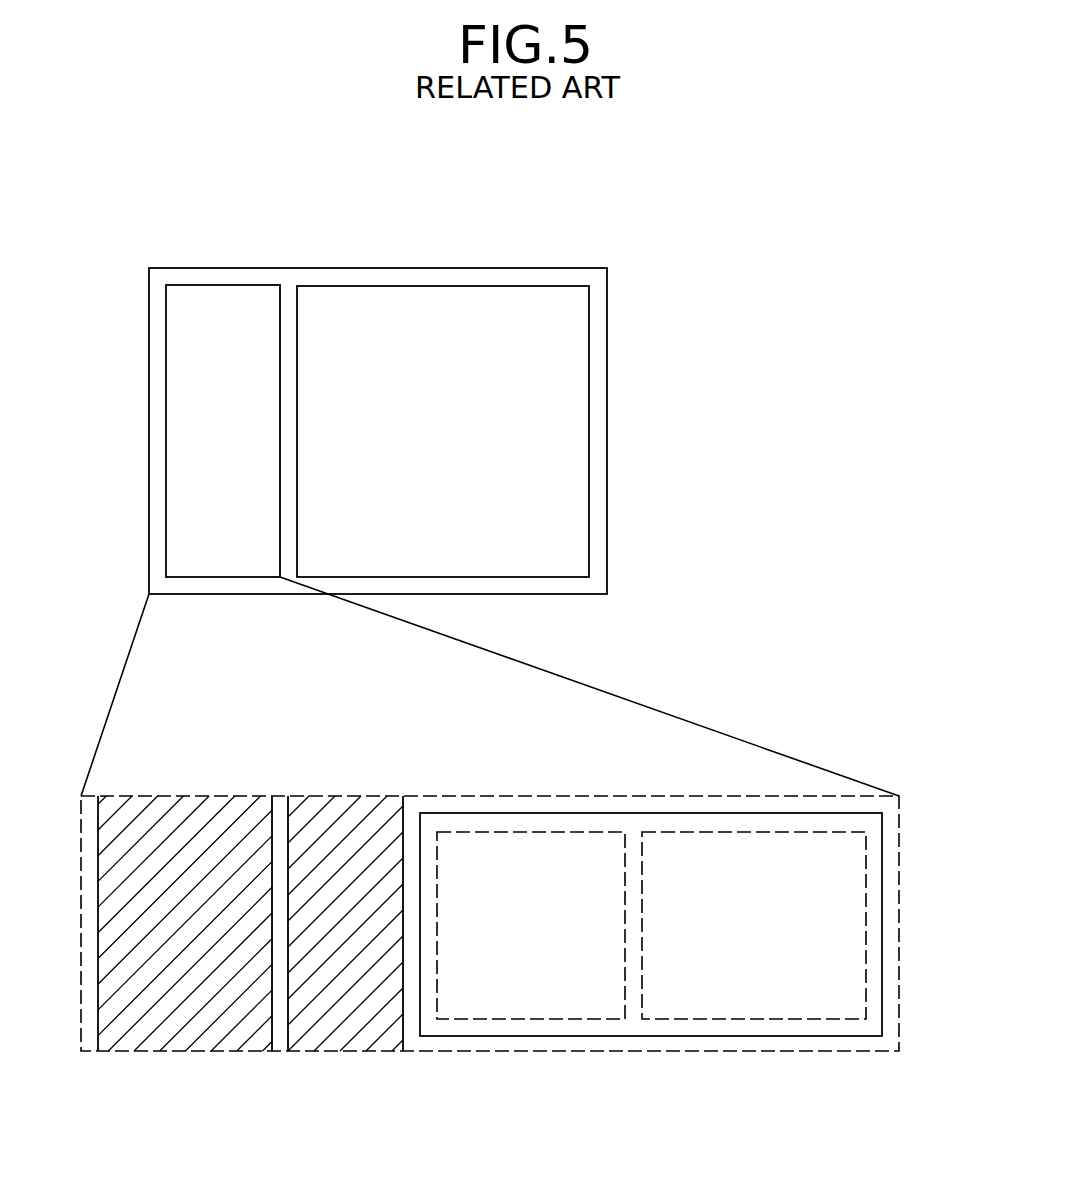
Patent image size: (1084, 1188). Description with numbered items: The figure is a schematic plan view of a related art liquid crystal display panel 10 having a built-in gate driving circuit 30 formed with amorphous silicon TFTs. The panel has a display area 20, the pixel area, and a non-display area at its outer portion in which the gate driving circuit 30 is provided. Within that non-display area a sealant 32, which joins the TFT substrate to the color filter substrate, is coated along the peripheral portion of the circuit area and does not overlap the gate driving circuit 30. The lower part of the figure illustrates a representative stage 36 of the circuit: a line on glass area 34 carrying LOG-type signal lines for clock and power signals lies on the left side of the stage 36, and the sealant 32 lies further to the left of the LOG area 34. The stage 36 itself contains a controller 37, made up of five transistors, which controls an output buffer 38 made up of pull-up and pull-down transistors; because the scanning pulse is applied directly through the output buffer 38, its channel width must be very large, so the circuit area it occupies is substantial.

The liquid crystal display panel 10 is at (607, 425).
The display area 20 is at (508, 391).
The gate driving circuit 30 is at (166, 432).
The sealant 32 is at (200, 1030).
The line on glass (LOG) area 34 is at (342, 1018).
The stage 36 is at (593, 1036).
The controller 37 is at (487, 1019).
The output buffer 38 is at (865, 927).